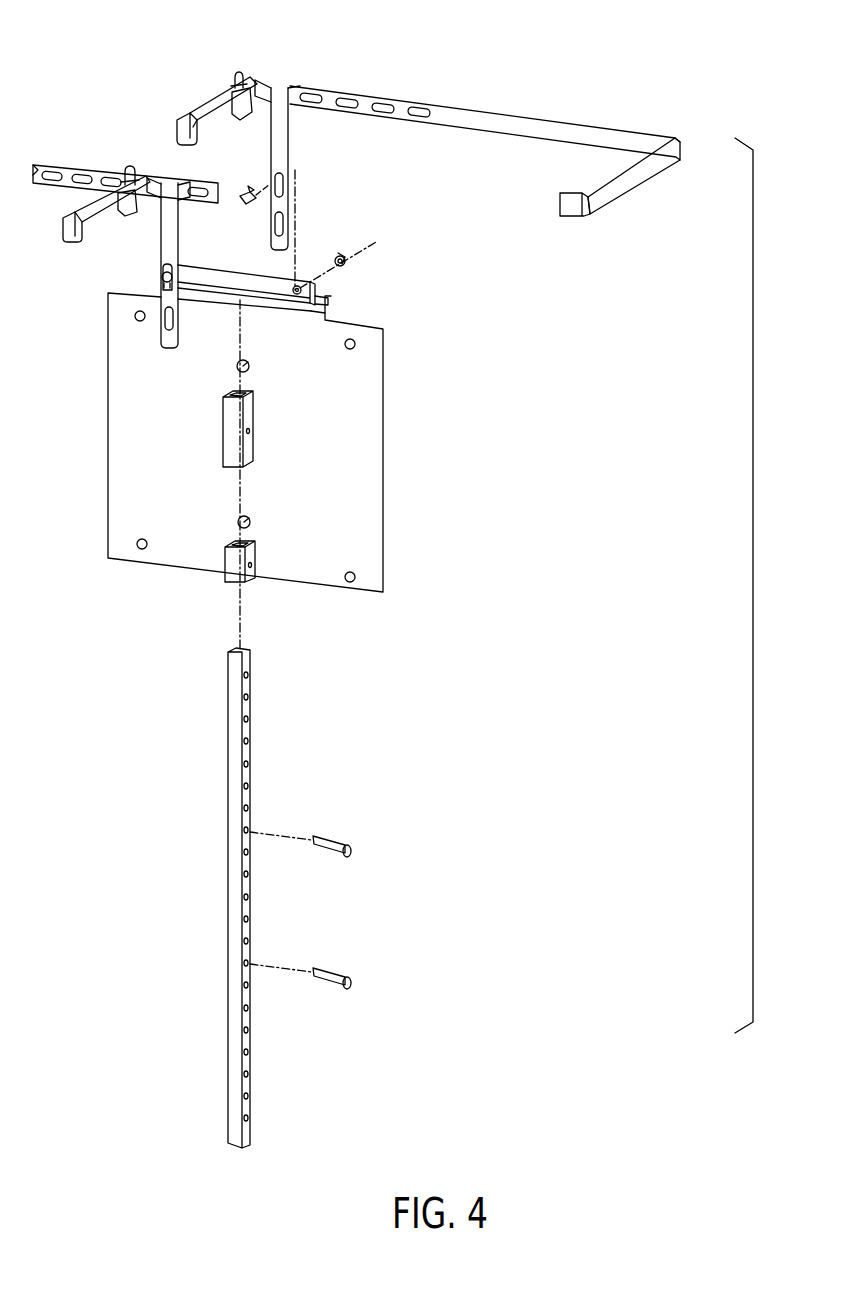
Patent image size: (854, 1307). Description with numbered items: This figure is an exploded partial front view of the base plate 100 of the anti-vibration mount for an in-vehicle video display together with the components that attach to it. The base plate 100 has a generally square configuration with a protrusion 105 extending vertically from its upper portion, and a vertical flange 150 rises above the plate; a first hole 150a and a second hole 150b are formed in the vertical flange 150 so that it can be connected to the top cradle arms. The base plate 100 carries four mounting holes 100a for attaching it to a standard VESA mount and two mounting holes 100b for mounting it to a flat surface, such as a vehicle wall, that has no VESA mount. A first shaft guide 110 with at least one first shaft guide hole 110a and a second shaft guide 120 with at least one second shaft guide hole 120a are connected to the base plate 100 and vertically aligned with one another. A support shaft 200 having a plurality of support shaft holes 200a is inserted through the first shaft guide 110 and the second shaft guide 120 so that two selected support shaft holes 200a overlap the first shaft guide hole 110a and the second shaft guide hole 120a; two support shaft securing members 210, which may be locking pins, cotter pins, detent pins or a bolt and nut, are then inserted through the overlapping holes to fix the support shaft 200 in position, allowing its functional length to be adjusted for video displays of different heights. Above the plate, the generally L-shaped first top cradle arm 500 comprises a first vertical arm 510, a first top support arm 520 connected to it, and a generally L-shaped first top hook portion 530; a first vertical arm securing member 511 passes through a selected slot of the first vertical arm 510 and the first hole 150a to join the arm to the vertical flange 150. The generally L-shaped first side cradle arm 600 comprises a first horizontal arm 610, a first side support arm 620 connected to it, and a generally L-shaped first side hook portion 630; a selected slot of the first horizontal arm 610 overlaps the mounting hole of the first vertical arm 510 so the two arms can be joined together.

The base plate 100 is at (385, 490).
The mounting holes 100a is at (140, 322).
The mounting holes 100b is at (236, 368).
The protrusion 105 is at (330, 312).
The first shaft guide 110 is at (228, 424).
The first shaft guide hole 110a is at (250, 432).
The second shaft guide 120 is at (230, 570).
The second shaft guide hole 120a is at (252, 566).
The vertical flange 150 is at (255, 284).
The first hole 150a is at (303, 288).
The second hole 150b is at (160, 278).
The support shaft 200 is at (205, 985).
The support shaft holes 200a is at (250, 787).
The support shaft securing members 210 is at (338, 836).
The first top cradle arm 500 is at (228, 68).
The first vertical arm 510 is at (134, 152).
The first vertical arm securing member 511 is at (243, 197).
The first top support arm 520 is at (212, 100).
The first top hook portion 530 is at (177, 132).
The first side cradle arm 600 is at (695, 133).
The first horizontal arm 610 is at (540, 117).
The first side support arm 620 is at (638, 175).
The first side hook portion 630 is at (568, 207).